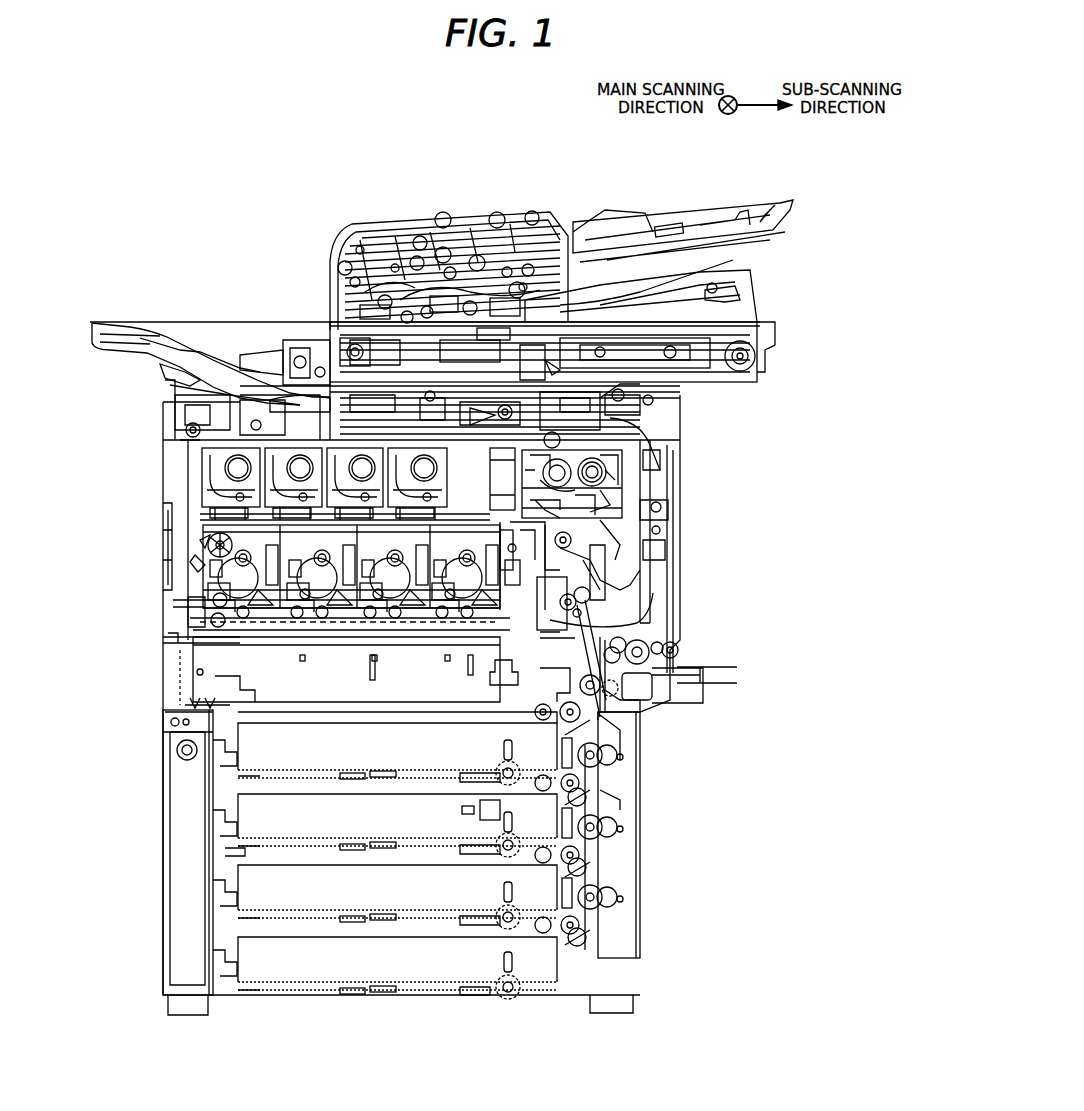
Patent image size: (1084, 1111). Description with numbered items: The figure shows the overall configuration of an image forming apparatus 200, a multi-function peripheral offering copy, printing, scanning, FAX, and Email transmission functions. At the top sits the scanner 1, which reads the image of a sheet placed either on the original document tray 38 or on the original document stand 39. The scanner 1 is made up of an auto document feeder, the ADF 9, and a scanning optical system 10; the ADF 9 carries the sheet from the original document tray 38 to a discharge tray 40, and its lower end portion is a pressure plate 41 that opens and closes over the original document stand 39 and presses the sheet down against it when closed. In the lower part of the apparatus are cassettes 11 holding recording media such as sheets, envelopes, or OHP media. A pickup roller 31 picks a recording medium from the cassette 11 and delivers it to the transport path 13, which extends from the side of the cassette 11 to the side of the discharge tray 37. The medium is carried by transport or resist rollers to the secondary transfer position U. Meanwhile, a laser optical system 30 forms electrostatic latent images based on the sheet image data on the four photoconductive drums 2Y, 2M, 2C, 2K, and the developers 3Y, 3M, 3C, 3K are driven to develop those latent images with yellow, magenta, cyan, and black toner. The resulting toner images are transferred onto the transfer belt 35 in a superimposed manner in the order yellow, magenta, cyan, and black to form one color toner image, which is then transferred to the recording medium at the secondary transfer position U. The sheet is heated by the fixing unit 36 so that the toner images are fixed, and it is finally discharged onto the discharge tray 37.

The scanner 1 is at (299, 202).
The image forming apparatus 200 is at (546, 180).
The auto document feeder (ADF) 9 is at (352, 232).
The scanning optical system 10 is at (350, 348).
The transport path 13 is at (297, 368).
The discharge tray 37 is at (168, 335).
The original document tray 38 is at (676, 215).
The original document stand 39 is at (770, 322).
The discharge tray 40 is at (733, 260).
The pressure plate 41 is at (748, 318).
The fixing unit 36 is at (600, 458).
The transfer belt 35 is at (500, 527).
The secondary transfer position U is at (575, 546).
The photoconductive drum 2Y is at (240, 575).
The photoconductive drum 2M is at (312, 575).
The photoconductive drum 2C is at (388, 574).
The photoconductive drum 2K is at (462, 572).
The developer 3Y is at (215, 606).
The developer 3M is at (280, 600).
The developer 3C is at (355, 600).
The developer 3K is at (430, 600).
The laser optical system 30 is at (508, 686).
The pickup roller 31 is at (543, 722).
The cassette 11 is at (240, 752).